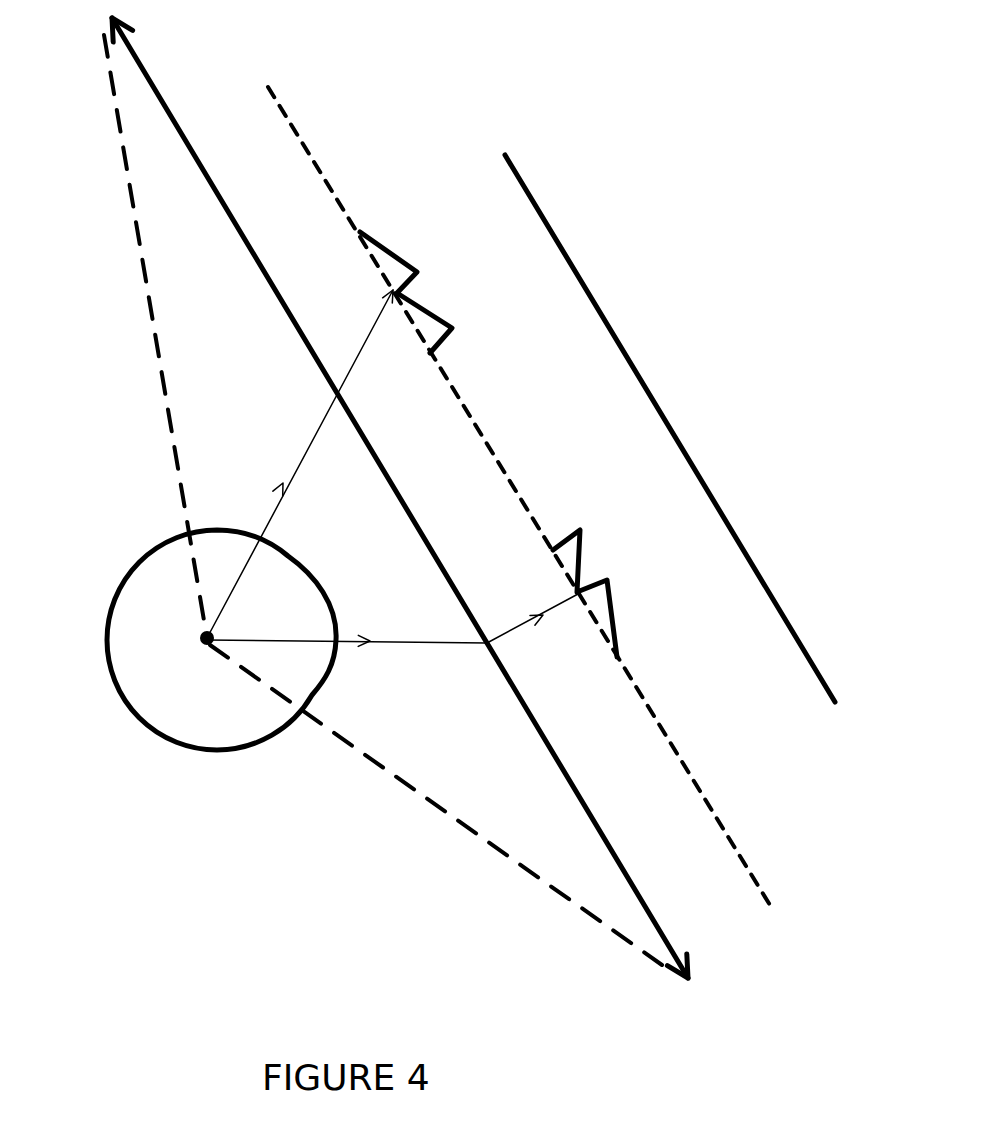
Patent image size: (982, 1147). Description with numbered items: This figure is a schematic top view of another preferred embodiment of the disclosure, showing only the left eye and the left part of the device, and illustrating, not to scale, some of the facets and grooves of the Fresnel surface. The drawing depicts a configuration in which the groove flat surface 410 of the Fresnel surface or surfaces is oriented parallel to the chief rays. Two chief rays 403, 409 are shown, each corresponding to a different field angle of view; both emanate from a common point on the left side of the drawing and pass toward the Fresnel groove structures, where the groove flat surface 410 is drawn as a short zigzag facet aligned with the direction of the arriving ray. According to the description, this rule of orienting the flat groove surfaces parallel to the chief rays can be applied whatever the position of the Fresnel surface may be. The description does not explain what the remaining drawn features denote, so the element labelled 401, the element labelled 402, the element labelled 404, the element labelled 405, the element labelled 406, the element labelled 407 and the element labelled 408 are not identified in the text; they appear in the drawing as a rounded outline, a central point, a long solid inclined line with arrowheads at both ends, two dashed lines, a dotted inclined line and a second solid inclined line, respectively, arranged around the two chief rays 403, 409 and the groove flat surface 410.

The scattering medium / object 401 is at (190, 755).
The point source 402 is at (207, 650).
The chief ray 403 is at (458, 643).
The interface line 404 is at (273, 302).
The dashed boundary ray 405 is at (167, 375).
The dashed boundary ray 406 is at (613, 922).
The dotted plane 407 is at (322, 177).
The detector plane 408 is at (560, 243).
The chief ray 409 is at (305, 447).
The groove flat surface 410 is at (400, 292).